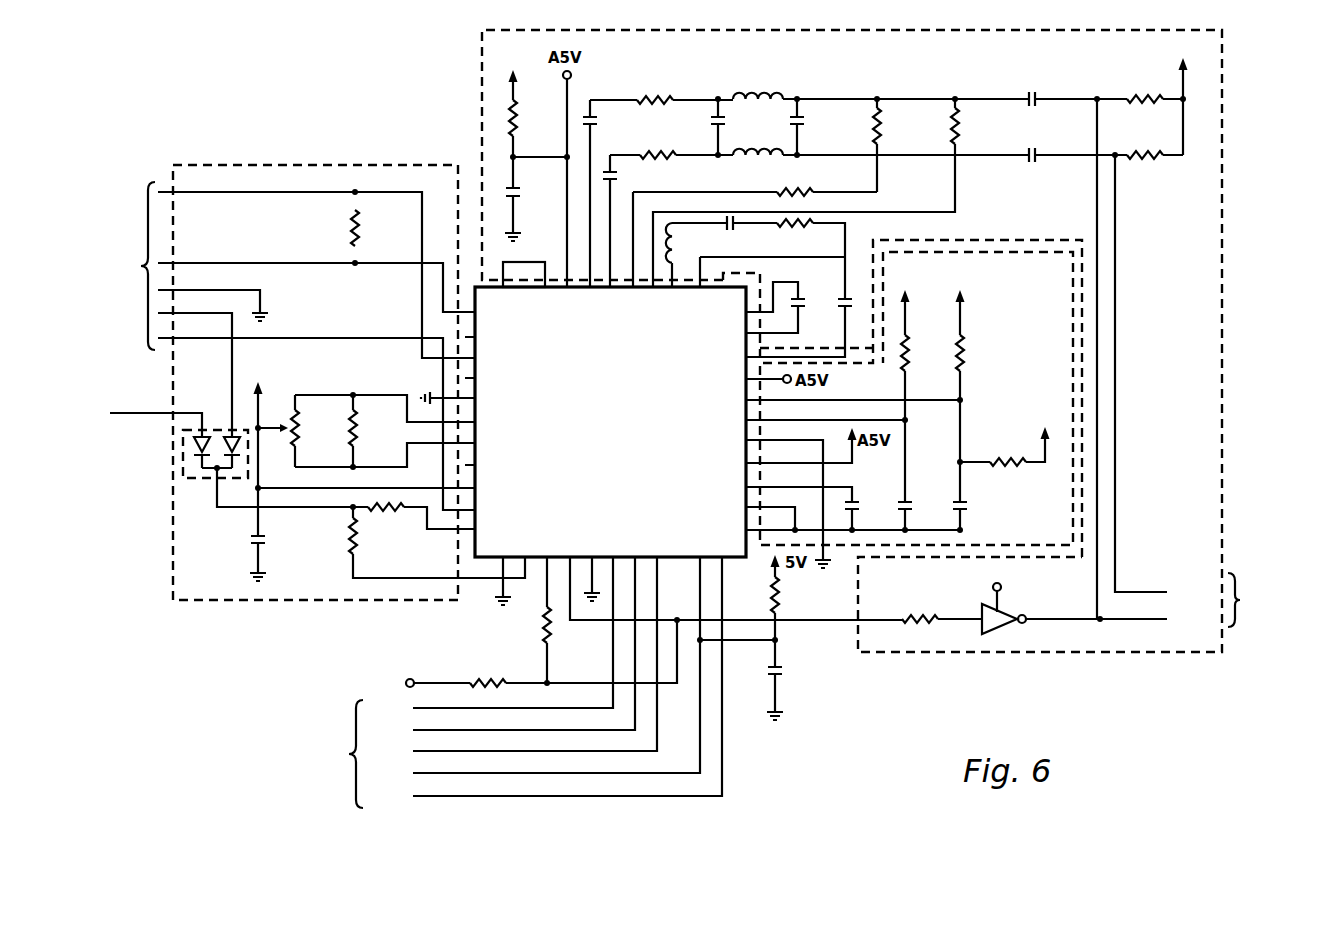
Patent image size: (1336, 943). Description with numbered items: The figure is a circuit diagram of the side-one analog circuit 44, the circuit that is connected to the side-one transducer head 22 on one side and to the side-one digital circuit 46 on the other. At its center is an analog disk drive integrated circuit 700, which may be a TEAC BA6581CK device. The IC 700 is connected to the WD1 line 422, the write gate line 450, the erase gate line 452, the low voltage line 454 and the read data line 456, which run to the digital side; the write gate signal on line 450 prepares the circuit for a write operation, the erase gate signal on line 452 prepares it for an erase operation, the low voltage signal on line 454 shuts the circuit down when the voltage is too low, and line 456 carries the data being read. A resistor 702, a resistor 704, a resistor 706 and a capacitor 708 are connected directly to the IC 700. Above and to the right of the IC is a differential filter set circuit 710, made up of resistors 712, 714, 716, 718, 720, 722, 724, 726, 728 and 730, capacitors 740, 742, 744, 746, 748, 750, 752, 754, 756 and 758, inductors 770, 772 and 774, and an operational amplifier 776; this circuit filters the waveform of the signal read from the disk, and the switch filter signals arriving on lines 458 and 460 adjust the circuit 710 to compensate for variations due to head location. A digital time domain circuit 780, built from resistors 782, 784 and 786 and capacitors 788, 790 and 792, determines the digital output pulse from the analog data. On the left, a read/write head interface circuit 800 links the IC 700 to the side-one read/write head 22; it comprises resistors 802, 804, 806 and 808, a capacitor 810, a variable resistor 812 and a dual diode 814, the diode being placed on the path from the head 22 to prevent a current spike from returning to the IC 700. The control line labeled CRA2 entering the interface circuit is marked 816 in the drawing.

The side-one transducer head 22 is at (271, 346).
The side-one analog circuit 44 is at (877, 712).
The side-one digital circuit 46 is at (786, 683).
The WD1 line 422 is at (489, 638).
The write gate line (WG1) 450 is at (500, 648).
The erase gate line (EG1) 452 is at (511, 659).
The low voltage line (LVS1) 454 is at (532, 671).
The read data line (RD11) 456 is at (543, 682).
The switch filter line (SF01) 458 is at (1167, 592).
The switch filter line (SF11) 460 is at (1167, 619).
The analog disk drive integrated circuit 700 is at (625, 457).
The resistor 702 is at (631, 625).
The resistor 704 is at (558, 640).
The resistor 706 is at (778, 603).
The capacitor 708 is at (784, 674).
The differential filter set circuit 710 is at (867, 30).
The resistor 712 is at (535, 118).
The resistor 714 is at (685, 84).
The resistor 716 is at (671, 143).
The resistor 718 is at (865, 145).
The resistor 720 is at (825, 193).
The resistor 722 is at (800, 183).
The resistor 724 is at (772, 259).
The resistor 726 is at (1163, 96).
The resistor 728 is at (1154, 138).
The resistor 730 is at (941, 605).
The capacitor 740 is at (530, 205).
The capacitor 742 is at (610, 193).
The capacitor 744 is at (617, 177).
The capacitor 746 is at (738, 127).
The capacitor 748 is at (816, 127).
The capacitor 750 is at (1078, 84).
The capacitor 752 is at (1078, 141).
The capacitor 754 is at (735, 232).
The capacitor 756 is at (824, 316).
The capacitor 758 is at (792, 300).
The inductor 770 is at (872, 82).
The inductor 772 is at (871, 167).
The inductor 774 is at (696, 255).
The operational amplifier 776 is at (1022, 598).
The digital time domain circuit 780 is at (1039, 390).
The resistor 782 is at (845, 385).
The resistor 784 is at (874, 385).
The resistor 786 is at (1024, 461).
The capacitor 788 is at (858, 506).
The capacitor 790 is at (921, 505).
The capacitor 792 is at (976, 505).
The read/write head interface circuit 800 is at (337, 165).
The resistor 802 is at (375, 228).
The resistor 804 is at (372, 431).
The resistor 806 is at (346, 505).
The resistor 808 is at (348, 551).
The capacitor 810 is at (250, 543).
The variable resistor 812 is at (359, 449).
The dual diode 814 is at (171, 460).
The CRA2 control line 816 is at (132, 414).